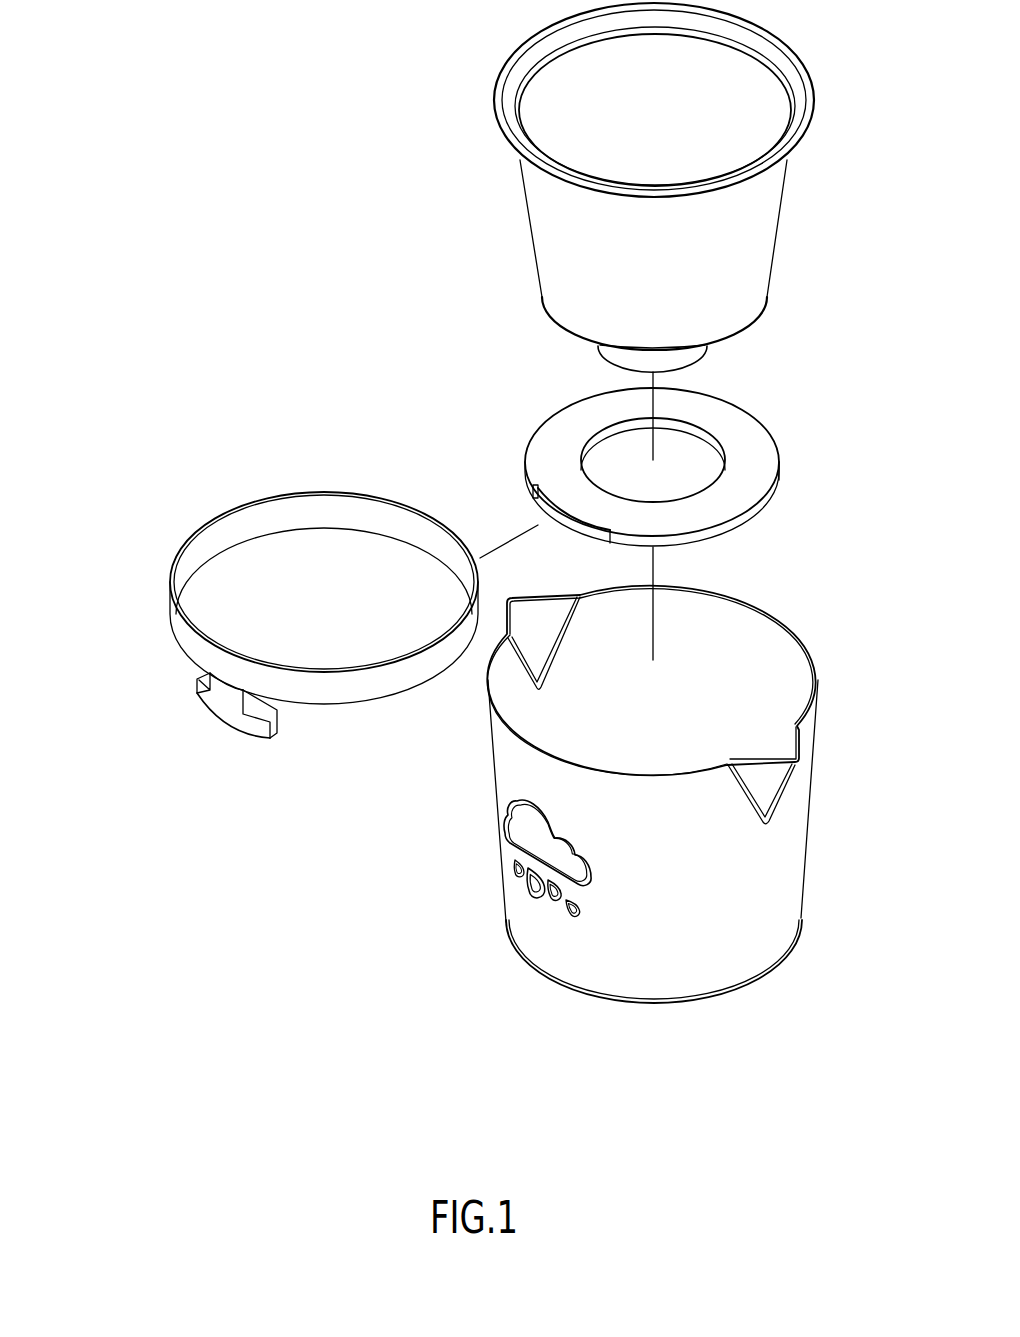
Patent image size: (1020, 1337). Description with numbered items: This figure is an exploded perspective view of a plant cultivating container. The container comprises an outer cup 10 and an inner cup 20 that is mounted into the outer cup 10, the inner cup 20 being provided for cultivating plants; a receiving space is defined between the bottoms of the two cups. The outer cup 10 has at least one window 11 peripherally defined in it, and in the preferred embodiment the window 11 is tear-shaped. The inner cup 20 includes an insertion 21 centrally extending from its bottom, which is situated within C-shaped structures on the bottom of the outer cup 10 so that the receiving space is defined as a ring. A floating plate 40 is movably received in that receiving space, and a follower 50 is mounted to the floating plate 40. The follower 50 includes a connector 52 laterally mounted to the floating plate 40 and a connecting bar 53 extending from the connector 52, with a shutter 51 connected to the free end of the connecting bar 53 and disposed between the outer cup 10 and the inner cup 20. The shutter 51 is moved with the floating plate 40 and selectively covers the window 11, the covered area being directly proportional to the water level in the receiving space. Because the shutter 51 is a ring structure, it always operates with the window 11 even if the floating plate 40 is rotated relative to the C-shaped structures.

The outer cup 10 is at (665, 832).
The window 11 is at (532, 892).
The inner cup 20 is at (572, 252).
The insertion 21 is at (668, 360).
The floating plate 40 is at (745, 493).
The follower 50 is at (261, 578).
The shutter 51 is at (323, 512).
The connector 52 is at (257, 727).
The connecting bar 53 is at (218, 683).